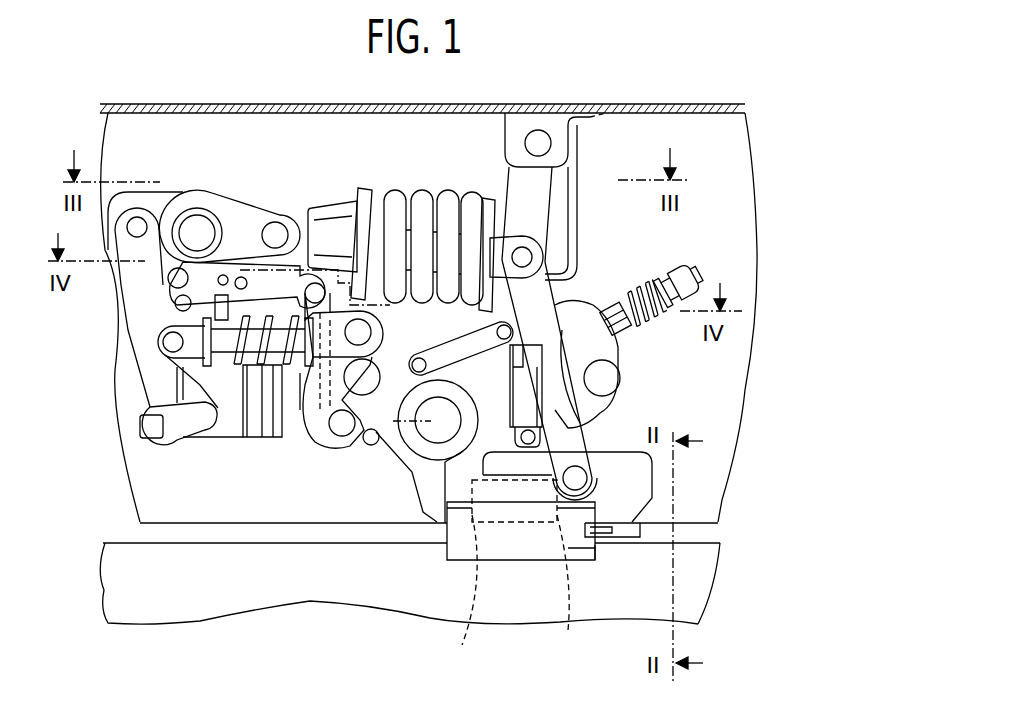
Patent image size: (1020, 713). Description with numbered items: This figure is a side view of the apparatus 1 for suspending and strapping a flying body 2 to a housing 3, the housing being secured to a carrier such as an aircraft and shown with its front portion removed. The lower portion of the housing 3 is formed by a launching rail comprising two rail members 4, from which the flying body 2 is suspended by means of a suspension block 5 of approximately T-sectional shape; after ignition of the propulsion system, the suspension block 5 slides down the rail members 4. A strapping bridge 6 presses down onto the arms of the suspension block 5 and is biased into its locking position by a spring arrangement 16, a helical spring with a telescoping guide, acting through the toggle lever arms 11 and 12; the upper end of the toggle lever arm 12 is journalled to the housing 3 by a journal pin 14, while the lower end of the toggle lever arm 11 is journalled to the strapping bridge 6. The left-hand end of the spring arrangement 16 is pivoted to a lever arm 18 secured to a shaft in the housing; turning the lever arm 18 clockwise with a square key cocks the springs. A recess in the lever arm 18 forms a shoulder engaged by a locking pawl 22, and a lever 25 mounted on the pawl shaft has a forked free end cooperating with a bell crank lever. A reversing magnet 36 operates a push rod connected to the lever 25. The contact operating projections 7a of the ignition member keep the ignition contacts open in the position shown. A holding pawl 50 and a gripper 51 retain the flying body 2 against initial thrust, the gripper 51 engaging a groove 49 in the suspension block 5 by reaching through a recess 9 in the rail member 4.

The apparatus 1 is at (272, 93).
The flying body 2 is at (335, 588).
The housing 3 is at (637, 108).
The rail members 4 is at (218, 535).
The suspension block 5 is at (528, 548).
The strapping bridge 6 is at (447, 505).
The contact operating projections 7a is at (524, 597).
The recess 9 is at (630, 538).
The toggle lever arm 11 is at (538, 298).
The toggle lever arm 12 is at (533, 203).
The journal pin 14 is at (546, 143).
The spring arrangement 16 is at (423, 237).
The lever arm 18 is at (184, 200).
The locking pawl 22 is at (168, 256).
The lever 25 is at (203, 277).
The reversing magnet 36 is at (255, 425).
The groove 49 is at (570, 552).
The holding pawl 50 is at (430, 473).
The gripper 51 is at (645, 497).